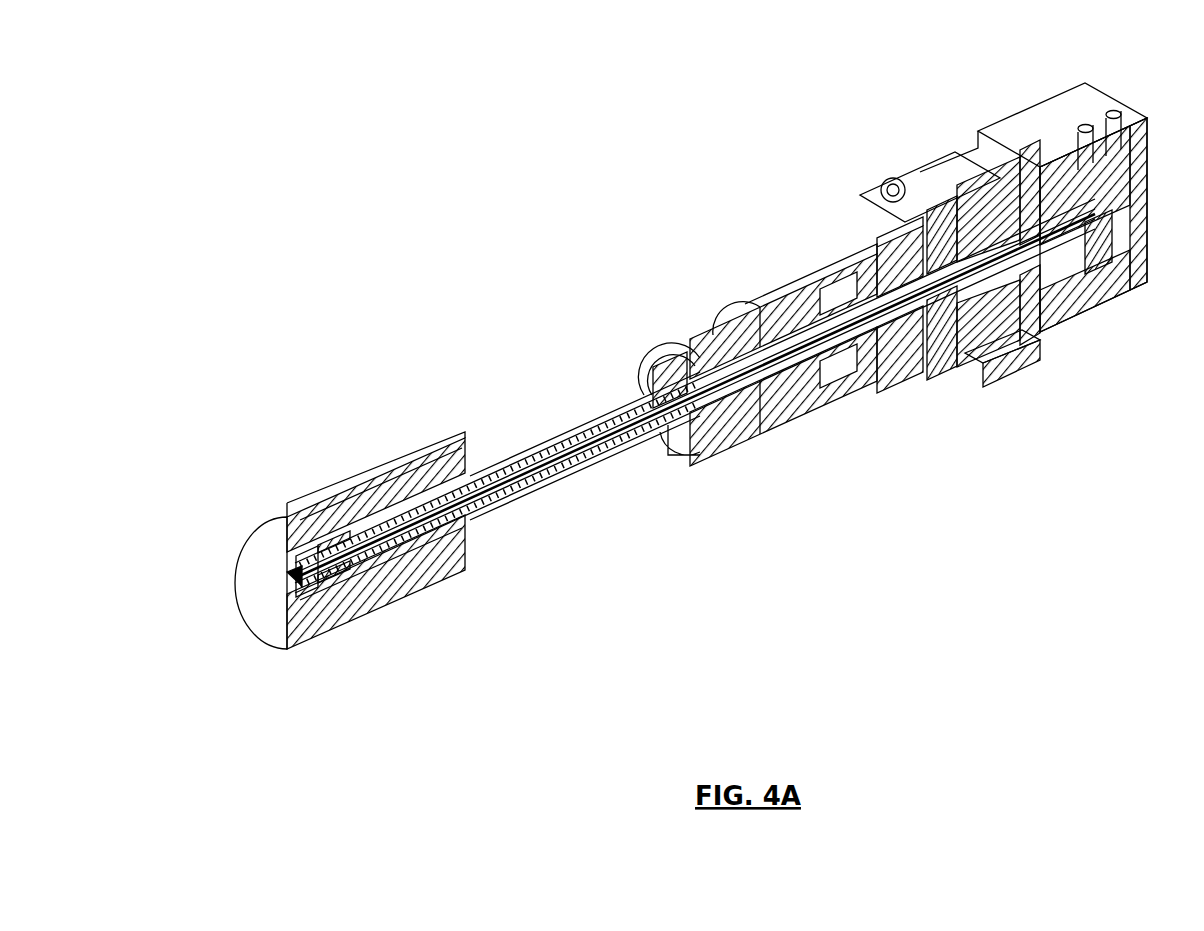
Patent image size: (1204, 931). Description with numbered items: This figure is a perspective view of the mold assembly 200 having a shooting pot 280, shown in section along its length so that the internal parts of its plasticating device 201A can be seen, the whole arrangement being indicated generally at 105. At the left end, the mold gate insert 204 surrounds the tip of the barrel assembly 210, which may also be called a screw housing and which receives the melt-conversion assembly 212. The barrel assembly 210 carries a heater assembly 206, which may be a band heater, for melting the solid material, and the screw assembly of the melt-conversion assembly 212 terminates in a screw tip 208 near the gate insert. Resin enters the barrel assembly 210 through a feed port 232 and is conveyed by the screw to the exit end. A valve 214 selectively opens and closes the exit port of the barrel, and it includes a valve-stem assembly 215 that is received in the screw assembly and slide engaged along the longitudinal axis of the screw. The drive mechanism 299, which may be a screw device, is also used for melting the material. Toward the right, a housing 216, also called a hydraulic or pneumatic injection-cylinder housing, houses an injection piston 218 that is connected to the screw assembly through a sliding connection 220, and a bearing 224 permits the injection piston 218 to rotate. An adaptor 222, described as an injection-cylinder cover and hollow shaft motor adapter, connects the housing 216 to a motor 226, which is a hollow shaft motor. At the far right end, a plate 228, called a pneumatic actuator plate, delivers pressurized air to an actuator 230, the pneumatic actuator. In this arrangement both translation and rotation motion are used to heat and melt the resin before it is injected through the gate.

The drive unit 105 is at (652, 131).
The mold assembly 200 is at (611, 228).
The actuator 201A is at (568, 321).
The mold gate insert 204 is at (325, 633).
The heater assembly 206 is at (340, 538).
The screw tip 208 is at (298, 575).
The barrel assembly 210 is at (290, 574).
The melt-conversion assembly 212 is at (435, 490).
The valve 214 is at (501, 346).
The valve-stem assembly 215 is at (565, 435).
The housing 216 is at (795, 278).
The injection piston 218 is at (850, 395).
The sliding connection 220 is at (795, 420).
The adaptor 222 is at (880, 233).
The bearing 224 is at (975, 385).
The motor 226 is at (908, 170).
The plate 228 is at (1060, 300).
The actuator 230 is at (1090, 265).
The feed port 232 is at (700, 400).
The shooting pot 280 is at (552, 650).
The drive mechanism 299 is at (592, 462).